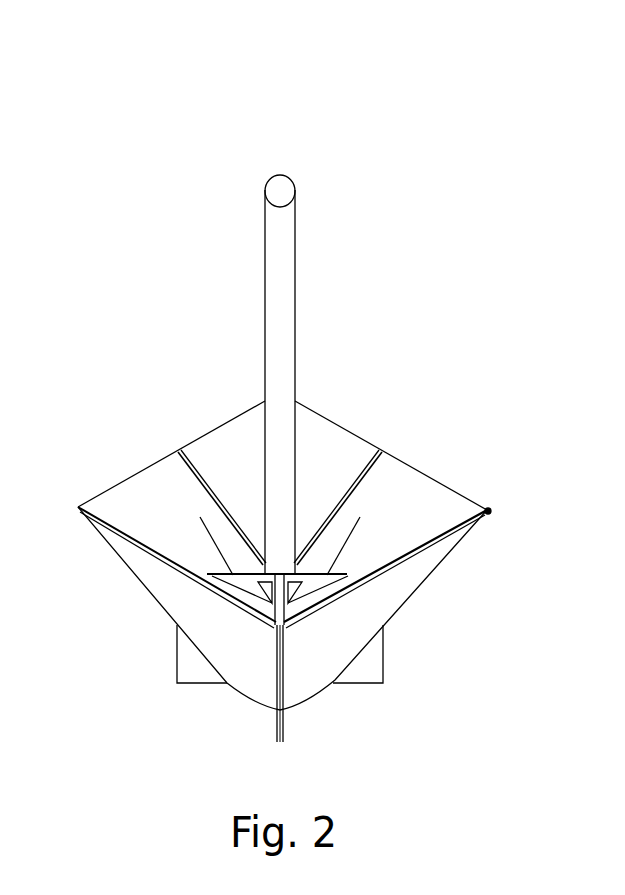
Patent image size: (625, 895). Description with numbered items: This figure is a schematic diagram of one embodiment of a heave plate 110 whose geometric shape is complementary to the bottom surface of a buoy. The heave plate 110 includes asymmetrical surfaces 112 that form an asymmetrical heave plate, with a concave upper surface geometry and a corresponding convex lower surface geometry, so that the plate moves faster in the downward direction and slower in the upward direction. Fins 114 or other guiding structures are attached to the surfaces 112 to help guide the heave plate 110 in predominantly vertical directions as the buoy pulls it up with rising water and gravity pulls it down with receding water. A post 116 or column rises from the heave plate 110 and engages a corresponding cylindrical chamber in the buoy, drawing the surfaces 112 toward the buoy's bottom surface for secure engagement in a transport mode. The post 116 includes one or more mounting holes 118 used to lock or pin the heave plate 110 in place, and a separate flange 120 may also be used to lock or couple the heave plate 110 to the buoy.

The heave plate 110 is at (170, 63).
The asymmetrical surfaces 112 is at (168, 475).
The fins 114 is at (188, 660).
The post 116 is at (278, 307).
The mounting holes 118 is at (287, 181).
The flange 120 is at (490, 507).